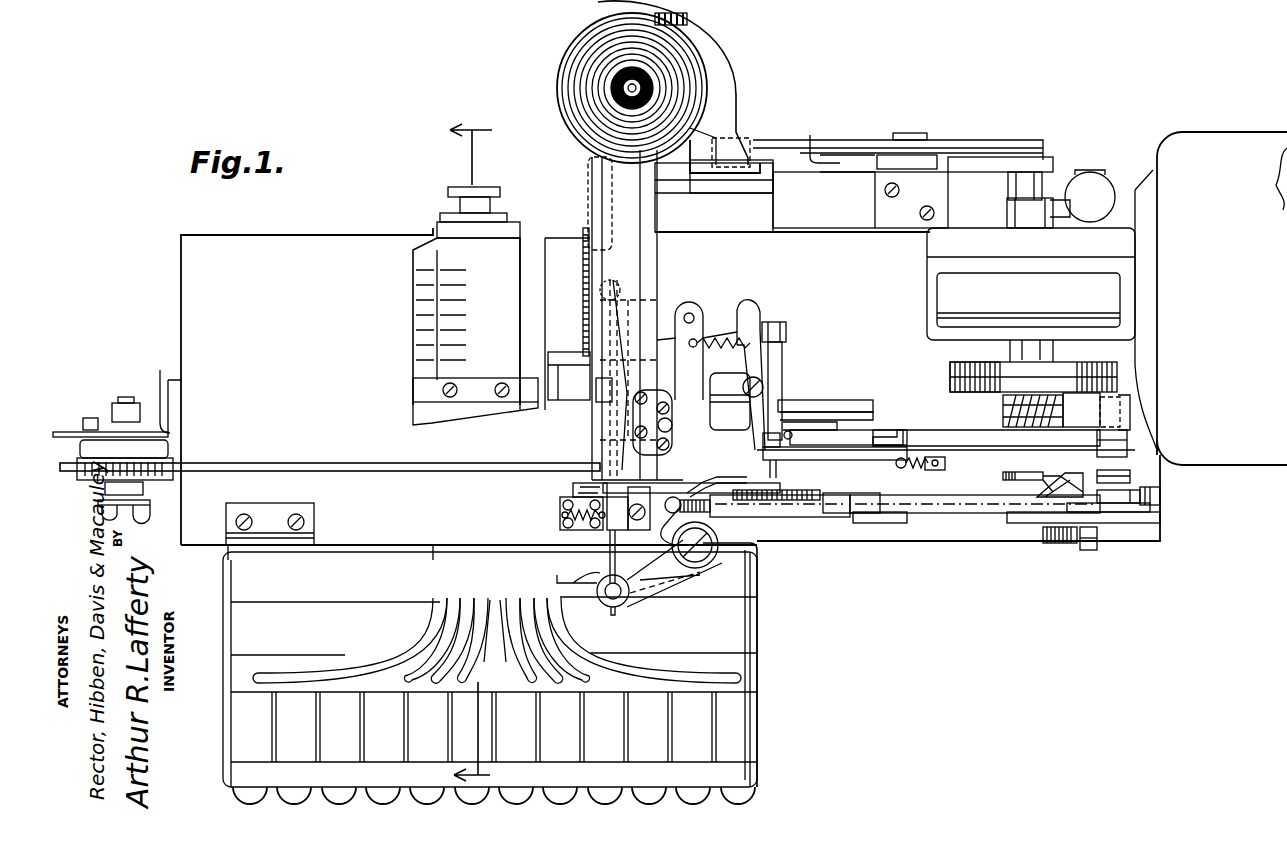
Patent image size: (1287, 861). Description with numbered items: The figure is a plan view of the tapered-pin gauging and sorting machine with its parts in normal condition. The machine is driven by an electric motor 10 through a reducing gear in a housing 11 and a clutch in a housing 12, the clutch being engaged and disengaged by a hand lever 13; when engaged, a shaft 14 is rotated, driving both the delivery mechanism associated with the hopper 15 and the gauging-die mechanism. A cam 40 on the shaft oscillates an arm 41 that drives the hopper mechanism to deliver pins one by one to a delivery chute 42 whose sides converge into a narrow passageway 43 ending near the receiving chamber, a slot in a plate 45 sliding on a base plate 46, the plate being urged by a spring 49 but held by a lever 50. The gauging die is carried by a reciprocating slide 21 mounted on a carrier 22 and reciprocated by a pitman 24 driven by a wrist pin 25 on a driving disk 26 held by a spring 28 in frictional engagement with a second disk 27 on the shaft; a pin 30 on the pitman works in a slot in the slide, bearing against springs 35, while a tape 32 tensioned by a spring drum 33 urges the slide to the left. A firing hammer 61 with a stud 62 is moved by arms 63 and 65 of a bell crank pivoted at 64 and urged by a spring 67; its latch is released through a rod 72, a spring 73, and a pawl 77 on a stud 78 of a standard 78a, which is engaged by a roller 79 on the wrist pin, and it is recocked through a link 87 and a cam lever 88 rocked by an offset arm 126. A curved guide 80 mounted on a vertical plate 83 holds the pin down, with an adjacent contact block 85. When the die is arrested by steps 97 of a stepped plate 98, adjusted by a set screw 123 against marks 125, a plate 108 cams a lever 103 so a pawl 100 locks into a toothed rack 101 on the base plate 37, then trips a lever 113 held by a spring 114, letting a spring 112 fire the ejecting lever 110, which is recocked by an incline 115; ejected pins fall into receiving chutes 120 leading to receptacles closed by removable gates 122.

The electric motor 10 is at (1195, 145).
The housing 11 is at (945, 294).
The housing 12 is at (935, 250).
The hand lever 13 is at (1093, 190).
The shaft 14 is at (1087, 140).
The hopper 15 is at (700, 65).
The reciprocating slide 21 is at (712, 445).
The carrier 22 is at (826, 404).
The pitman 24 is at (940, 446).
The wrist pin 25 is at (1120, 458).
The driving disk 26 is at (952, 388).
The second disk 27 is at (952, 366).
The spring 28 is at (1004, 406).
The pin 30 is at (880, 470).
The tape 32 is at (305, 466).
The spring drum 33 is at (100, 470).
The springs 35 is at (925, 470).
The base plate 37 is at (750, 250).
The cam 40 is at (1000, 165).
The arm 41 is at (975, 152).
The delivery chute 42 is at (635, 248).
The narrow passageway 43 is at (600, 385).
The plate 45 is at (638, 530).
The base plate 46 is at (590, 575).
The spring 49 is at (608, 530).
The lever 50 is at (560, 520).
The firing hammer 61 is at (612, 565).
The stud 62 is at (605, 600).
The arm of bell crank lever 63 is at (655, 585).
The pivot 64 is at (712, 560).
The arm of bell crank lever 65 is at (672, 538).
The spring 67 is at (712, 510).
The rod 72 is at (990, 512).
The spring 73 is at (790, 496).
The pawl 77 is at (1075, 480).
The stud 78 is at (1088, 545).
The standard 78a is at (1100, 527).
The roller 79 is at (1125, 477).
The curved guide 80 is at (668, 492).
The vertical plate 83 is at (703, 478).
The contact block 85 is at (571, 490).
The link 87 is at (957, 502).
The cam lever 88 is at (1150, 497).
The steps 97 is at (497, 412).
The stepped plate 98 is at (470, 405).
The pawl 100 is at (775, 340).
The toothed rack 101 is at (786, 360).
The lever 103 is at (768, 385).
The plate 108 is at (790, 440).
The pivoted lever 110 is at (705, 320).
The spring 112 is at (583, 280).
The lever 113 is at (750, 335).
The spring 114 is at (672, 380).
The incline 115 is at (572, 352).
The receiving chutes 120 is at (405, 660).
The removable gates 122 is at (648, 790).
The set screw 123 is at (448, 200).
The marks 125 is at (430, 315).
The offset arm 126 is at (1020, 474).